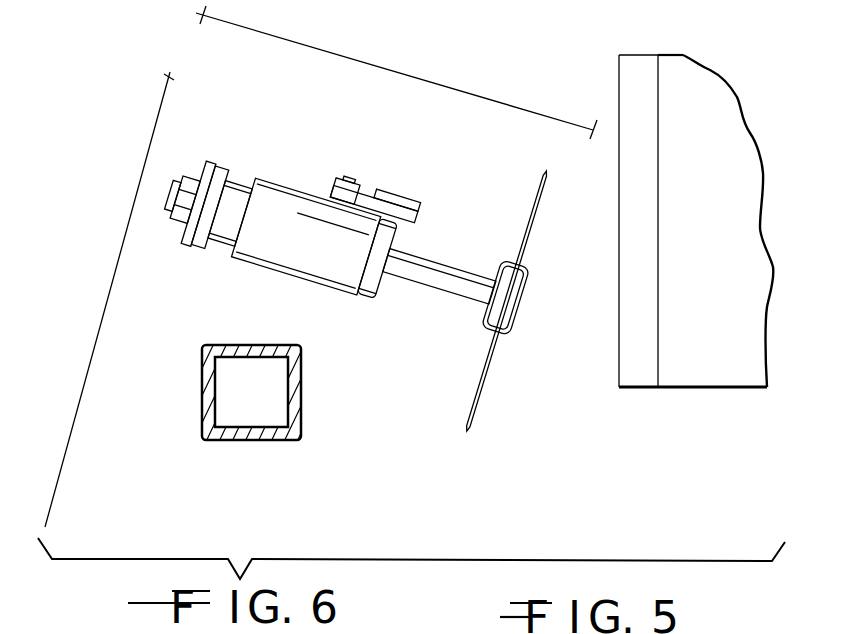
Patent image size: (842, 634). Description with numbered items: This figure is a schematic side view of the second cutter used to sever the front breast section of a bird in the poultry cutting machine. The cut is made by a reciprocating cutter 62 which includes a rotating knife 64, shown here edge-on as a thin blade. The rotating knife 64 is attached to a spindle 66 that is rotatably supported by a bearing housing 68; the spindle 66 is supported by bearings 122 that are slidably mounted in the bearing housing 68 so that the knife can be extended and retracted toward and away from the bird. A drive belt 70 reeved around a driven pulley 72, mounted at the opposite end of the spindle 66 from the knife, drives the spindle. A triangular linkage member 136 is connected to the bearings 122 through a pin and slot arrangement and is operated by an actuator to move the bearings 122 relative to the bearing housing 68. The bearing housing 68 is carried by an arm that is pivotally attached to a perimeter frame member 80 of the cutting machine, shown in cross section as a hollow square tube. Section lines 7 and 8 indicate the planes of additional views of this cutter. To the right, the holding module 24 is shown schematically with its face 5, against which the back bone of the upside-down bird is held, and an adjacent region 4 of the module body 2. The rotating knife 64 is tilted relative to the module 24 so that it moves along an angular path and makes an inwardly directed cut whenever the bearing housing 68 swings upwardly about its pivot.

The board 2 is at (671, 254).
The board layer 4 is at (703, 220).
The face 5 is at (629, 220).
The section line 7- 7 is at (204, 18).
The section line 8- 8 is at (167, 82).
The holding module 24 is at (638, 406).
The reciprocating cutter 62 is at (339, 270).
The rotating knife 64 is at (472, 395).
The spindle 66 is at (456, 264).
The bearing housing 68 is at (328, 280).
The drive belt 70 is at (220, 165).
The driven pulley 72 is at (230, 175).
The perimeter frame member 80 is at (301, 390).
The bearings 122 is at (226, 240).
The triangular linkage member 136 is at (369, 183).